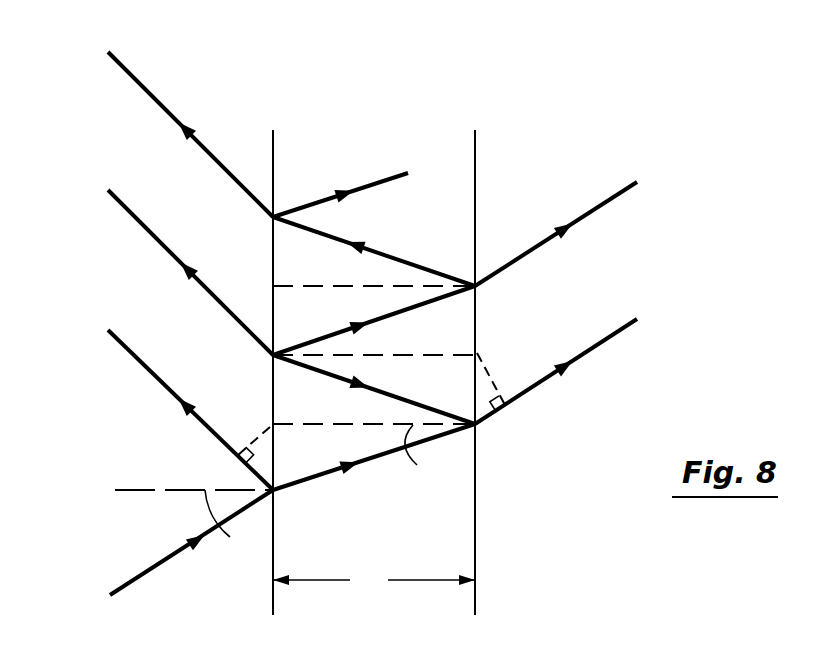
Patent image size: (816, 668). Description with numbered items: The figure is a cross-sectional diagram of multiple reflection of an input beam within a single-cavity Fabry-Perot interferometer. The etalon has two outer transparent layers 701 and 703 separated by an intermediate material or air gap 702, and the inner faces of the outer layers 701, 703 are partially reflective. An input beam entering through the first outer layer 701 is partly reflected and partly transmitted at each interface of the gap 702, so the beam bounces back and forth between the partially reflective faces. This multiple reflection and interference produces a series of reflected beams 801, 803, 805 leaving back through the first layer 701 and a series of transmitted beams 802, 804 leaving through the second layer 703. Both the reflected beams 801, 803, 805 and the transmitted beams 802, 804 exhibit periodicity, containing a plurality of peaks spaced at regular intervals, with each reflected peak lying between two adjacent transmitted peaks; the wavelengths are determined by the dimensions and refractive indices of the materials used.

The outer transparent layer 701 is at (148, 529).
The intermediate material or air gap 702 is at (393, 513).
The outer transparent layer 703 is at (587, 500).
The reflected beam 801 is at (118, 342).
The transmitted beam 802 is at (620, 330).
The reflected beam 803 is at (118, 202).
The transmitted beam 804 is at (620, 193).
The reflected beam 805 is at (118, 62).